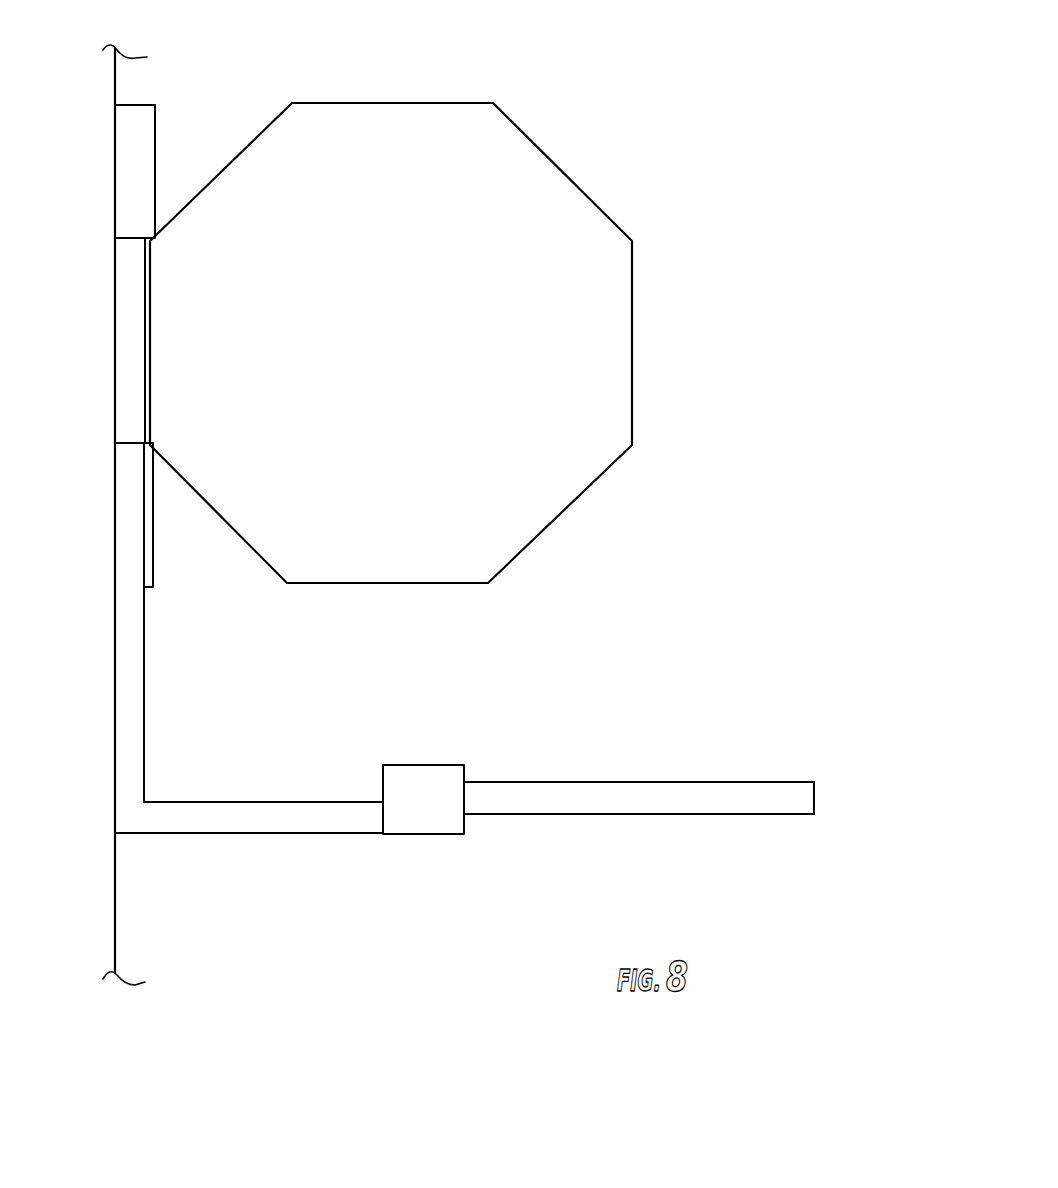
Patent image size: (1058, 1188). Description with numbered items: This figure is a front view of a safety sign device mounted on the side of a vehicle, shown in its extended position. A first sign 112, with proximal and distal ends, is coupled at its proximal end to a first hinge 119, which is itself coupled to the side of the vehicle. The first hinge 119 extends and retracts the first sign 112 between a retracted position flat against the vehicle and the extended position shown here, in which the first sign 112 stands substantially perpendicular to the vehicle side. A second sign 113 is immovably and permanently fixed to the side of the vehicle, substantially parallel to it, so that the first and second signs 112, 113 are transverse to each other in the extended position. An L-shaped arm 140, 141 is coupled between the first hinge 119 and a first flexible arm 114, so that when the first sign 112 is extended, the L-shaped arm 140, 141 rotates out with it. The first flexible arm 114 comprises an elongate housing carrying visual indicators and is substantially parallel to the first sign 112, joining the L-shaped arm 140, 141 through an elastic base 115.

The first sign 112 is at (535, 165).
The second sign 113 is at (140, 135).
The first flexible arm 114 is at (620, 758).
The elastic base 115 is at (448, 770).
The first hinge 119 is at (130, 253).
The L-shaped arm 140 is at (130, 690).
The L-shaped arm 141 is at (250, 817).